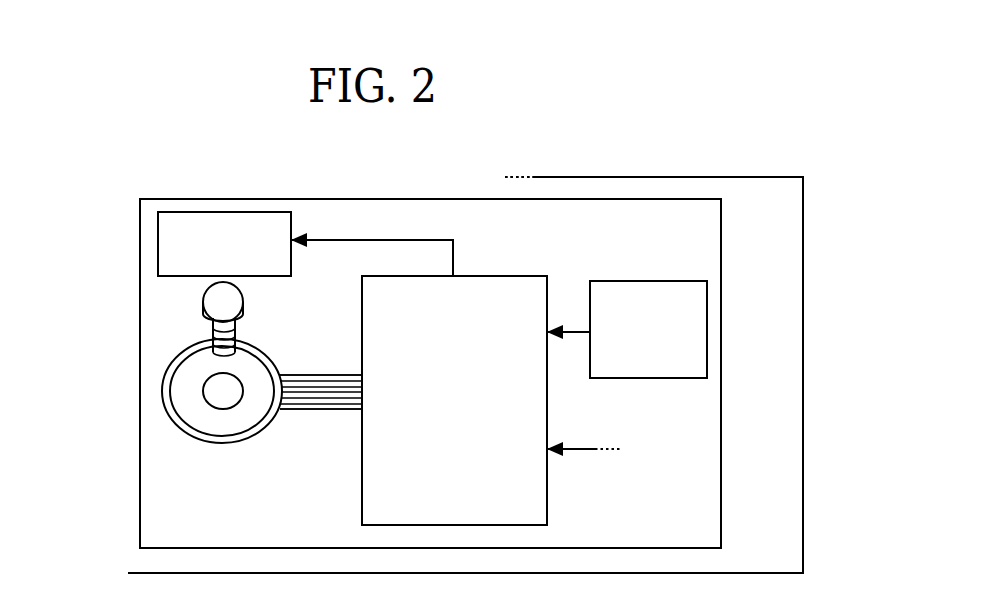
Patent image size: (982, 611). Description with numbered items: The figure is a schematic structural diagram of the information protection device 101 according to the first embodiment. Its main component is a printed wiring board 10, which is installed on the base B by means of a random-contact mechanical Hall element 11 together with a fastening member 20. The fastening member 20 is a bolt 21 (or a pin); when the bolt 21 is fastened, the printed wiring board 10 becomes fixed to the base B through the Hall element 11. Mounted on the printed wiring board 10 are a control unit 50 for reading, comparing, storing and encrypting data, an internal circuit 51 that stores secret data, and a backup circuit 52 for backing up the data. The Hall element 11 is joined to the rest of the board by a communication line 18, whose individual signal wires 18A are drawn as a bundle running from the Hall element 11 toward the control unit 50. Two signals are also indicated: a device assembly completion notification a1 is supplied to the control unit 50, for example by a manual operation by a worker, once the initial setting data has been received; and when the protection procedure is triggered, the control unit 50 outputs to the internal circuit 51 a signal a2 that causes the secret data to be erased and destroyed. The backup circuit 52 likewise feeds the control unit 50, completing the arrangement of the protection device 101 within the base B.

The apparatus 101 is at (533, 165).
The base B is at (803, 488).
The printed wiring board 10 is at (721, 465).
The random-contact mechanical Hall element 11 is at (163, 423).
The communication line 18 is at (358, 475).
The signal wires 18A is at (293, 410).
The fastening member 20 is at (193, 310).
The bolt 21 is at (240, 328).
The control unit 50 is at (547, 513).
The internal circuit 51 is at (247, 212).
The backup circuit 52 is at (693, 280).
The device assembly completion notification a1 is at (588, 442).
The signal to erase and destroy the data a2 is at (421, 233).